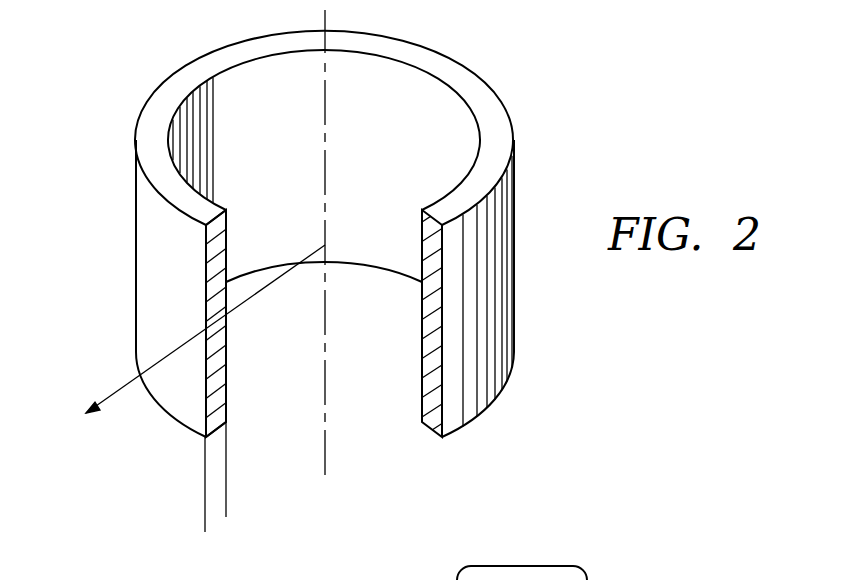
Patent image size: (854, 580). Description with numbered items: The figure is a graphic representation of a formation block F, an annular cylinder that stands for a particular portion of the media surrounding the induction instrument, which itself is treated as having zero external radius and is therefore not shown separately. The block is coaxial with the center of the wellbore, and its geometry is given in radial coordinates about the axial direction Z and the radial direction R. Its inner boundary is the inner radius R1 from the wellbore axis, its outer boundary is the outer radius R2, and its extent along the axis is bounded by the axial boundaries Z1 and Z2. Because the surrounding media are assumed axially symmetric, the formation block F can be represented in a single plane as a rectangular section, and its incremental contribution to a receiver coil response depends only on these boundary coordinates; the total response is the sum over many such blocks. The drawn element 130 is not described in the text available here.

The formation block F is at (478, 74).
The axial coordinate axis Z is at (322, 261).
The radial coordinate direction R is at (194, 339).
The first axial boundary Z1 is at (206, 225).
The second axial boundary Z2 is at (206, 437).
The inner radius R1 is at (248, 492).
The outer radius R2 is at (181, 506).
The start block 130 is at (592, 579).